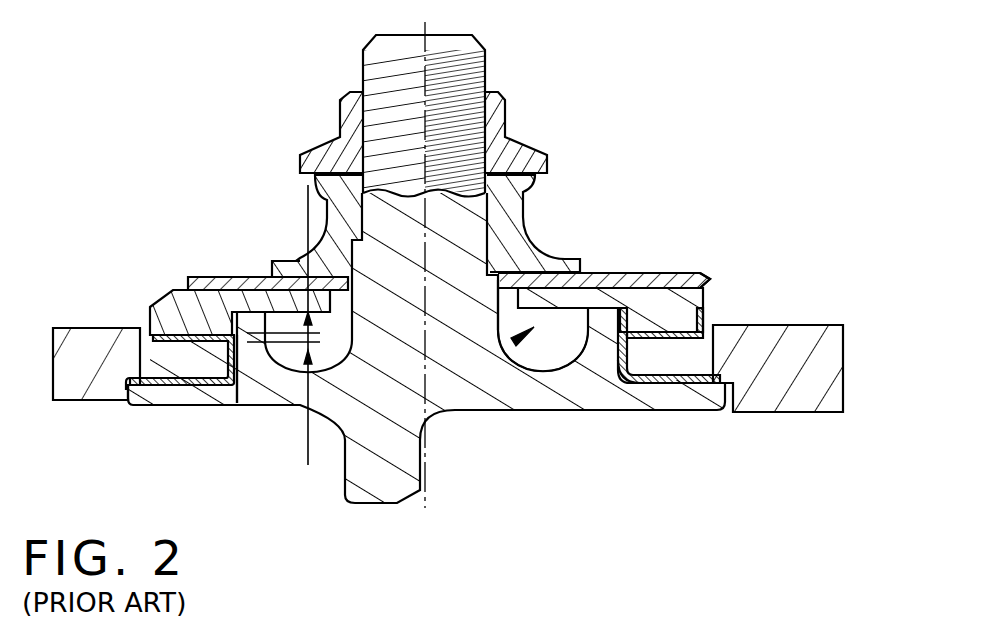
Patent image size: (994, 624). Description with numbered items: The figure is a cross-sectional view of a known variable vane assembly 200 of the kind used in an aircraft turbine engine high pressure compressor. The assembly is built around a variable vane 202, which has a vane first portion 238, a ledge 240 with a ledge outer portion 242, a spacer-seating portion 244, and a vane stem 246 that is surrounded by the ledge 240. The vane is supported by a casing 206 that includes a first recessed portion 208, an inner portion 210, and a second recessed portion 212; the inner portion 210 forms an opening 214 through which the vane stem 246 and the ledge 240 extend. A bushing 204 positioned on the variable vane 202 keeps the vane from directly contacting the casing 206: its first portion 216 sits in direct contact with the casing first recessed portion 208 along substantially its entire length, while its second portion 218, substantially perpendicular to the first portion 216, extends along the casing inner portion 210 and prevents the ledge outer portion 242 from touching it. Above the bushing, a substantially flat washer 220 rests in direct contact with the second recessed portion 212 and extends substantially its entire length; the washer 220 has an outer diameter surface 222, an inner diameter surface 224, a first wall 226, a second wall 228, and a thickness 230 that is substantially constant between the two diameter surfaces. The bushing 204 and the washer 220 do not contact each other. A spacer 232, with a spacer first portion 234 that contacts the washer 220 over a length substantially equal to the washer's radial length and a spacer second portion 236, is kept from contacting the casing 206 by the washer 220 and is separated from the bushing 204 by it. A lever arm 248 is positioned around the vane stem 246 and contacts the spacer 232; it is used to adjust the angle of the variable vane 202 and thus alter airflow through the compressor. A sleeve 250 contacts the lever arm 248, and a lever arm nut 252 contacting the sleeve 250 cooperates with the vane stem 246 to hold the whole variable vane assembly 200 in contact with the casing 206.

The variable vane assembly 200 is at (177, 167).
The variable vane 202 is at (360, 480).
The bushing 204 is at (203, 395).
The casing 206 is at (810, 348).
The first recessed portion 208 is at (688, 388).
The inner portion 210 is at (616, 370).
The second recessed portion 212 is at (703, 296).
The opening 214 is at (503, 345).
The first portion 216 is at (132, 392).
The second portion 218 is at (266, 380).
The washer 220 is at (670, 288).
The outer diameter surface 222 is at (707, 328).
The inner diameter surface 224 is at (617, 273).
The first wall 226 is at (687, 338).
The second wall 228 is at (645, 273).
The thickness 230 is at (302, 433).
The spacer 232 is at (183, 305).
The spacer first portion 234 is at (187, 338).
The spacer second portion 236 is at (258, 275).
The vane first portion 238 is at (653, 343).
The ledge 240 is at (585, 365).
The ledge outer portion 242 is at (158, 340).
The spacer-seating portion 244 is at (240, 288).
The vane stem 246 is at (385, 72).
The lever arm 248 is at (704, 274).
The sleeve 250 is at (513, 192).
The lever arm nut 252 is at (517, 147).